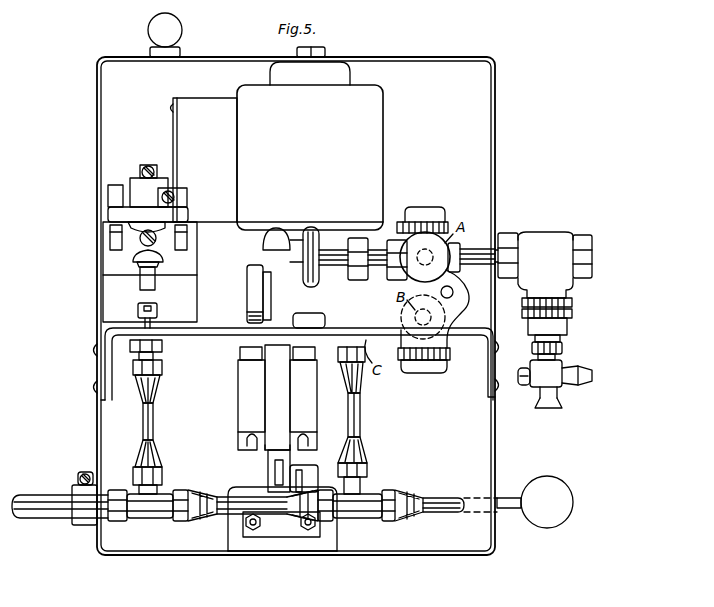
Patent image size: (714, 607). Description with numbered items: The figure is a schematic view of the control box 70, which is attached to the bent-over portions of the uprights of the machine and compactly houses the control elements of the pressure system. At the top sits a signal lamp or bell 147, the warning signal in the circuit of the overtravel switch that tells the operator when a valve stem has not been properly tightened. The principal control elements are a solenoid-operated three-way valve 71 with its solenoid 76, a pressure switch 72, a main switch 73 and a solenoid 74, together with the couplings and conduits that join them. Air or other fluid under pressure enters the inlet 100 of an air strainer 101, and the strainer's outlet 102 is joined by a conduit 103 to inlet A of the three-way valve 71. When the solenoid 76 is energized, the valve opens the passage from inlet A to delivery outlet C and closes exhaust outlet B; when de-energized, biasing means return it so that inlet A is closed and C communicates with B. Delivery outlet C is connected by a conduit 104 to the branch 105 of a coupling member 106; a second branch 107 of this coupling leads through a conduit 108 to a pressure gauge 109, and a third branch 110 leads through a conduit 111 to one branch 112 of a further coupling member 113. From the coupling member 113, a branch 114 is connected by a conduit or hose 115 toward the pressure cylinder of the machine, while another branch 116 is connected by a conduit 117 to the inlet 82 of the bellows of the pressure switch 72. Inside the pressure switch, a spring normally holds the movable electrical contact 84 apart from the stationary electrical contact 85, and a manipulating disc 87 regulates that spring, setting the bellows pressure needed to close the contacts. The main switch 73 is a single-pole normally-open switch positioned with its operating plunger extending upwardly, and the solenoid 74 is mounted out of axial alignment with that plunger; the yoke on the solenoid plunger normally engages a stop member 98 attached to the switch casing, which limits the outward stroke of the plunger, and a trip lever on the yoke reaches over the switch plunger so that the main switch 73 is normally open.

The control box 70 is at (497, 140).
The signal lamp or bell 147 is at (181, 29).
The solenoid 76 is at (377, 152).
The pressure switch 72 is at (113, 258).
The stationary electrical contact 85 is at (110, 225).
The electrical contact 84 is at (110, 236).
The manipulating disc 87 is at (138, 268).
The solenoid-operated three-way valve 71 is at (277, 278).
The conduit 103 is at (477, 250).
The outlet 102 is at (502, 233).
The air strainer 101 is at (542, 240).
The inlet 100 is at (593, 250).
The solenoid 74 is at (243, 403).
The stop member 98 is at (247, 493).
The main switch 73 is at (335, 535).
The inlet 82 is at (163, 345).
The conduit 117 is at (152, 420).
The branch 116 is at (135, 484).
The coupling member 113 is at (150, 502).
The conduit or hose 115 is at (27, 500).
The branch 114 is at (125, 519).
The branch 112 is at (177, 519).
The conduit 111 is at (273, 507).
The third branch 110 is at (332, 515).
The conduit 104 is at (360, 418).
The branch 105 is at (367, 460).
The coupling member 106 is at (360, 500).
The branch 107 is at (380, 512).
The conduit 108 is at (437, 500).
The pressure gauge 109 is at (557, 488).